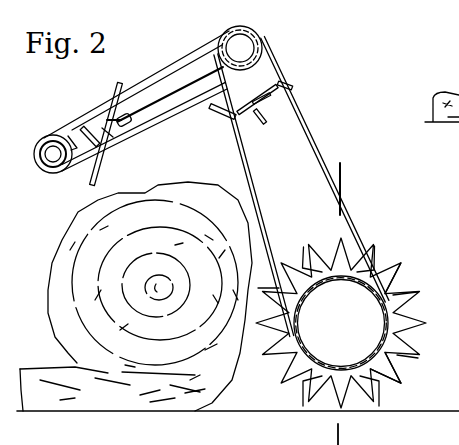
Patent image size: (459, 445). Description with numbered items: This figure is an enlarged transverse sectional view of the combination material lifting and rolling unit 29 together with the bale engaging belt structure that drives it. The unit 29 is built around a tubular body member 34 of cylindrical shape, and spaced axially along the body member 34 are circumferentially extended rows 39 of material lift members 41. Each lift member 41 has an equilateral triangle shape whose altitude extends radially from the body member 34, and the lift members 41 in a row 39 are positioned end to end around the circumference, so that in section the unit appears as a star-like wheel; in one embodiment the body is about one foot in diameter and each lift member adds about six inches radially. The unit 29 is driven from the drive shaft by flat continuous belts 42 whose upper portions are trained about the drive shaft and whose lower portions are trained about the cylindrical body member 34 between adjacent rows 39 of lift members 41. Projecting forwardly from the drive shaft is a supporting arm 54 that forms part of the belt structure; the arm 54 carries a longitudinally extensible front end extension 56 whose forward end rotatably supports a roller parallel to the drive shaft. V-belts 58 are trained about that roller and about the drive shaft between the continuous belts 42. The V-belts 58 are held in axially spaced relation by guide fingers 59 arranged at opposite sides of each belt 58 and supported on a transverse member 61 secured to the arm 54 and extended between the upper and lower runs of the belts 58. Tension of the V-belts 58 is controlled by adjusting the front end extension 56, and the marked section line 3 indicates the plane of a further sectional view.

The section line for FIG. 3 is at (338, 176).
The combination material lifting and rolling unit 29 is at (408, 318).
The tubular body member 34 is at (345, 363).
The rows of material lift members 39 is at (398, 381).
The material lift member 41 is at (390, 266).
The flat continuous belt 42 is at (303, 128).
The supporting arm 54 is at (160, 99).
The front end extension 56 is at (78, 133).
The V-belt 58 is at (190, 50).
The guide finger 59 is at (117, 82).
The transverse member 61 is at (126, 130).